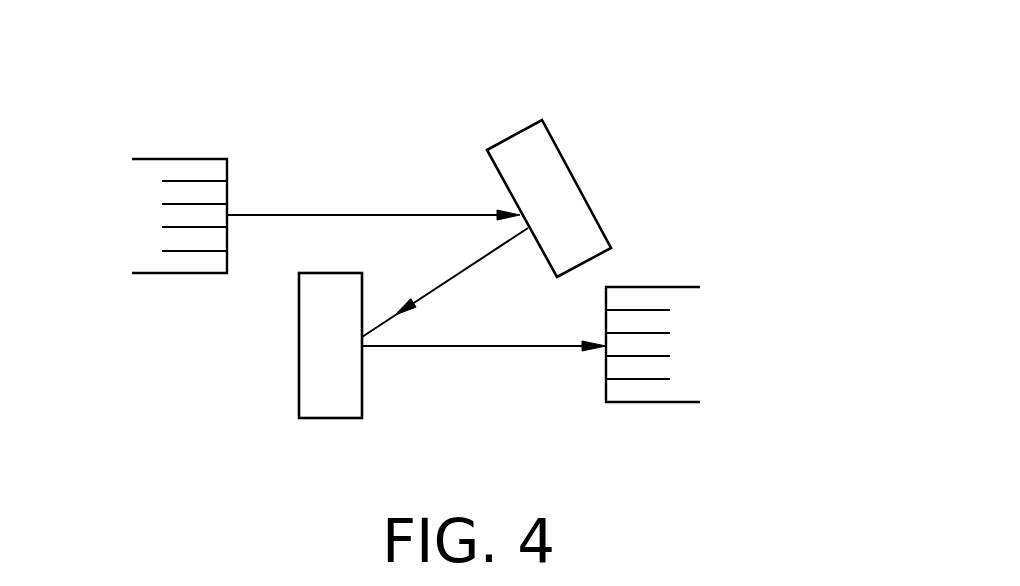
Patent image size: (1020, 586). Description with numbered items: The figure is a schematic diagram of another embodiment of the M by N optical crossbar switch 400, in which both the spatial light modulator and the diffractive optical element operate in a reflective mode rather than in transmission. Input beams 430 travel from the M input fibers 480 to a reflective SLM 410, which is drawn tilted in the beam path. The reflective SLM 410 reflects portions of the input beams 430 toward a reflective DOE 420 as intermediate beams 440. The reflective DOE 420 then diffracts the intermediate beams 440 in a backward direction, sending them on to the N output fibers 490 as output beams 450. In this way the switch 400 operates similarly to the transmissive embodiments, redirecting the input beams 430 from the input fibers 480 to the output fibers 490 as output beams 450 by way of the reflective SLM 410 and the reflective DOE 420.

The M×N optical crossbar switch 400 is at (618, 76).
The reflective SLM 410 is at (513, 133).
The reflective DOE 420 is at (299, 376).
The input beams 430 is at (301, 213).
The intermediate beams 440 is at (470, 263).
The output beams 450 is at (440, 347).
The input fibers 480 is at (182, 159).
The output fibers 490 is at (645, 402).